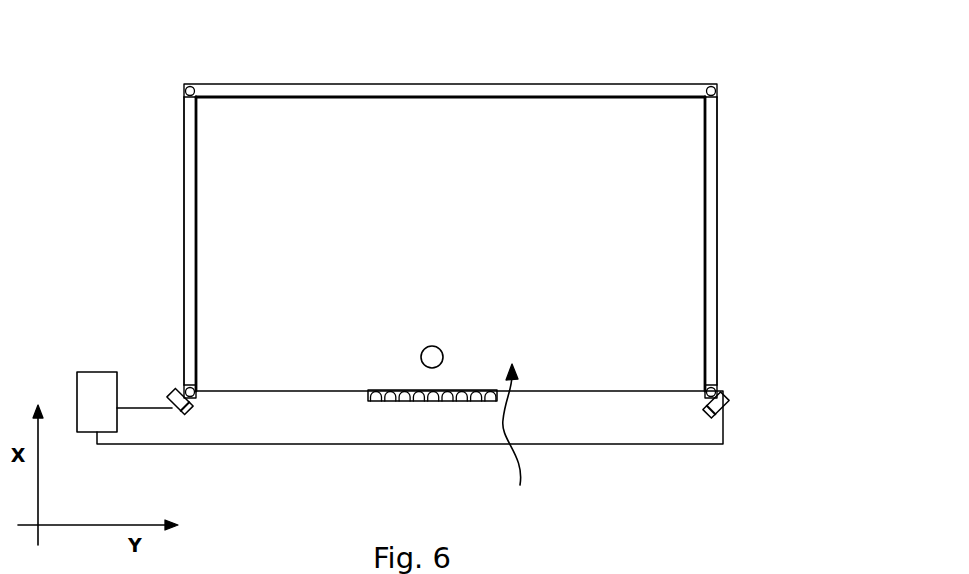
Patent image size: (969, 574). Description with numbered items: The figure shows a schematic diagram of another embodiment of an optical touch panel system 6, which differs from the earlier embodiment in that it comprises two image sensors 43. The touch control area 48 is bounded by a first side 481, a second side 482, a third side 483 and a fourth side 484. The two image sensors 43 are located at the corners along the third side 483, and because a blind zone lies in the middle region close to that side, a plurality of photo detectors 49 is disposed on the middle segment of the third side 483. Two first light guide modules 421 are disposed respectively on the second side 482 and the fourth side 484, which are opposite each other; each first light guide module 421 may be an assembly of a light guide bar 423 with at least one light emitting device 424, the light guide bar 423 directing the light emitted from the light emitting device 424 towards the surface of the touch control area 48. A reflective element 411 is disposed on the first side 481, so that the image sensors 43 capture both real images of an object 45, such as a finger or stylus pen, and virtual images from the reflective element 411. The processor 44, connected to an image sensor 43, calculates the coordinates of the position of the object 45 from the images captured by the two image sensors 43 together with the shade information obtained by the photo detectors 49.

The optical touch panel system 6 is at (733, 45).
The reflective element 411 is at (470, 90).
The first side 481 is at (364, 97).
The second side 482 is at (705, 198).
The third side 483 is at (340, 392).
The fourth side 484 is at (196, 278).
The first light guide module 421 is at (60, 112).
The light guide bar 423 is at (189, 195).
The light emitting device 424 is at (187, 91).
The image sensor 43 is at (184, 414).
The processor 44 is at (103, 372).
The object 45 is at (432, 362).
The touch control area 48 is at (514, 435).
The photo detectors 49 is at (390, 396).